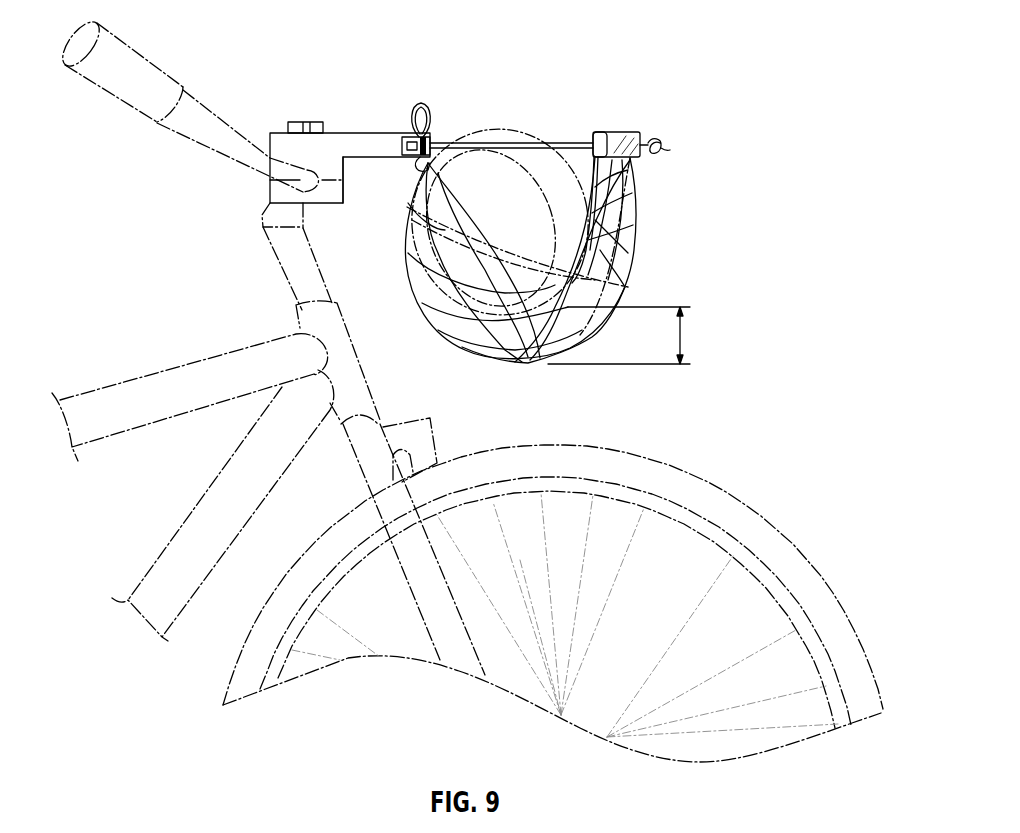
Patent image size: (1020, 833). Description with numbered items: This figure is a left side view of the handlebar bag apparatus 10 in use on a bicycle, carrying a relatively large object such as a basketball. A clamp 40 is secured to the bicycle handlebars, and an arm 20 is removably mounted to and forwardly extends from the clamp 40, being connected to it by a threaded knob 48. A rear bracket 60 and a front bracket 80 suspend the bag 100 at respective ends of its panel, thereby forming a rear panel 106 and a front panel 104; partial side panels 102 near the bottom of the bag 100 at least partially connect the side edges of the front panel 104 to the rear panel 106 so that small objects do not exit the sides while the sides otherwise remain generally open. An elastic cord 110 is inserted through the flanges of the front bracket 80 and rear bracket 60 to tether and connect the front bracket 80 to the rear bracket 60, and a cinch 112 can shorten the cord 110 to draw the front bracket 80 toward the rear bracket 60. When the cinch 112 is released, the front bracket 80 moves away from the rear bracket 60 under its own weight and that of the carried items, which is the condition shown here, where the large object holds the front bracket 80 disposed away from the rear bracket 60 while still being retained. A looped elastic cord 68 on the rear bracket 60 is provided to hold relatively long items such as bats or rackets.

The handlebar bag apparatus 10 is at (727, 63).
The arm 20 is at (367, 133).
The clamp 40 is at (343, 203).
The threaded knob 48 is at (303, 122).
The rear bracket 60 is at (432, 143).
The cord 68 is at (418, 104).
The front bracket 80 is at (600, 137).
The bag 100 is at (530, 239).
The partial side panel 102 is at (686, 338).
The front panel 104 is at (637, 190).
The rear panel 106 is at (410, 277).
The cord 110 is at (523, 143).
The cinch 112 is at (648, 140).